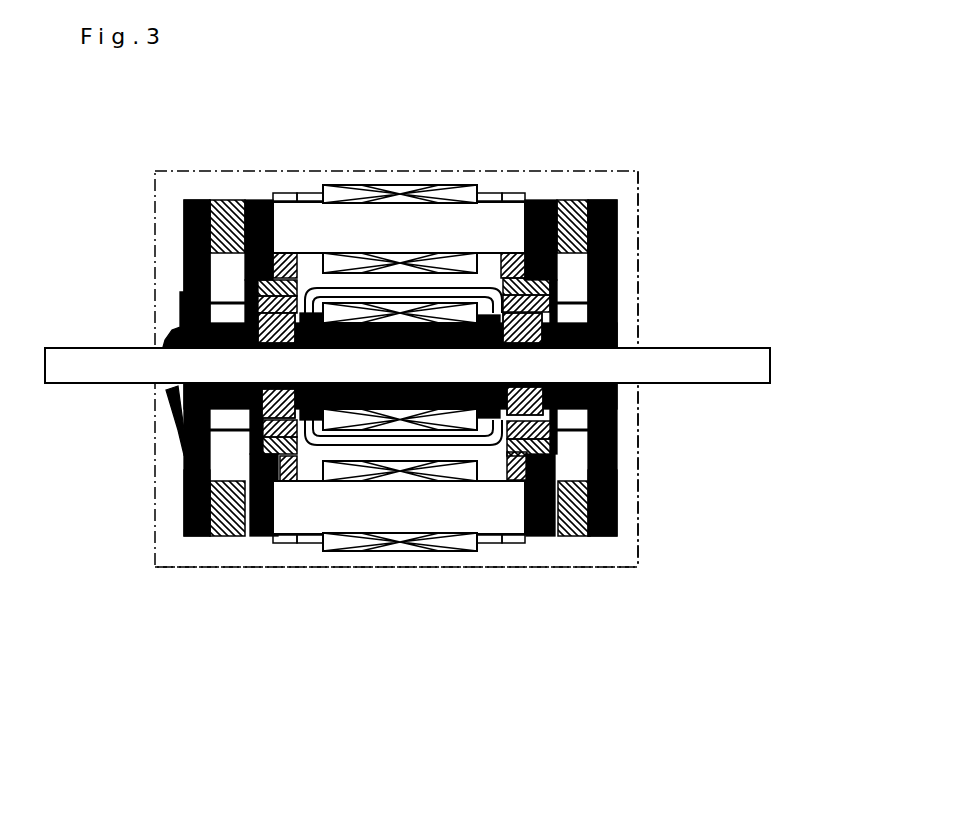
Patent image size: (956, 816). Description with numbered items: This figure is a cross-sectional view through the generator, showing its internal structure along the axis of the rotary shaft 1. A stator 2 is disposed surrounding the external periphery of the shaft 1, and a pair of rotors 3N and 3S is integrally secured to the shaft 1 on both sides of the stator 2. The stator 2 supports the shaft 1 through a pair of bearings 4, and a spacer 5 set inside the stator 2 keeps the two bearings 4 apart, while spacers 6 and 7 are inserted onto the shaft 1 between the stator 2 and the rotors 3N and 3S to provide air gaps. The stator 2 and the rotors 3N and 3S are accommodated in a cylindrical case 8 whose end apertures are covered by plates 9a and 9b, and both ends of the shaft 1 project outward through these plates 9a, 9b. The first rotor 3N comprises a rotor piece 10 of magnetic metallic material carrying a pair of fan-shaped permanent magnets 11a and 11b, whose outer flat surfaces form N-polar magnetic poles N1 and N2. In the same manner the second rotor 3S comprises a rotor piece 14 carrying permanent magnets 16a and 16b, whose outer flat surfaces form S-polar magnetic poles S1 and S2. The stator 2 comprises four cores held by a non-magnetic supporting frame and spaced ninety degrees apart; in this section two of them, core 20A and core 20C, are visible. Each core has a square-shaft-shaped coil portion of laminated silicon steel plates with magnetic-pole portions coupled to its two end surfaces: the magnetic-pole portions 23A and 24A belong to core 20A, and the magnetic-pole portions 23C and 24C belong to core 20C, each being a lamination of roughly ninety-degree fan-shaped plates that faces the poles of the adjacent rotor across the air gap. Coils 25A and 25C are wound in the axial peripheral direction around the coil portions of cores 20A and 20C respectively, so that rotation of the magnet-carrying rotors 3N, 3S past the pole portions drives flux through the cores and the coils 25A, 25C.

The rotary shaft 1 is at (55, 352).
The stator 2 is at (488, 184).
The rotor 3N is at (193, 196).
The rotor 3S is at (613, 195).
The bearing 4 is at (188, 487).
The spacer 5 is at (373, 409).
The spacer 6 is at (228, 410).
The spacer 7 is at (570, 409).
The cylindrical case 8 is at (476, 560).
The plate 9a is at (155, 412).
The plate 9b is at (640, 410).
The rotor piece 10 is at (184, 230).
The rotor piece 14 is at (616, 222).
The permanent magnet 11a is at (228, 200).
The permanent magnet 11b is at (225, 536).
The permanent magnet 16a is at (583, 200).
The permanent magnet 16b is at (580, 536).
The N-polar magnetic pole N1 is at (273, 196).
The N-polar magnetic pole N2 is at (270, 536).
The S-polar magnetic pole S1 is at (540, 200).
The S-polar magnetic pole S2 is at (543, 536).
The core 20A is at (317, 192).
The core 20C is at (377, 520).
The magnetic-pole portion 23A is at (243, 263).
The magnetic-pole portion 23C is at (281, 506).
The magnetic-pole portion 24A is at (557, 258).
The magnetic-pole portion 24C is at (528, 500).
The coil 25A is at (400, 185).
The coil 25C is at (415, 551).